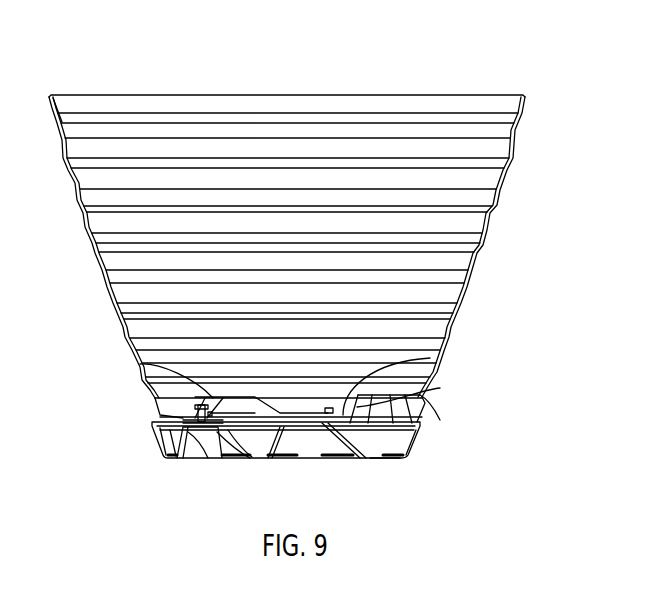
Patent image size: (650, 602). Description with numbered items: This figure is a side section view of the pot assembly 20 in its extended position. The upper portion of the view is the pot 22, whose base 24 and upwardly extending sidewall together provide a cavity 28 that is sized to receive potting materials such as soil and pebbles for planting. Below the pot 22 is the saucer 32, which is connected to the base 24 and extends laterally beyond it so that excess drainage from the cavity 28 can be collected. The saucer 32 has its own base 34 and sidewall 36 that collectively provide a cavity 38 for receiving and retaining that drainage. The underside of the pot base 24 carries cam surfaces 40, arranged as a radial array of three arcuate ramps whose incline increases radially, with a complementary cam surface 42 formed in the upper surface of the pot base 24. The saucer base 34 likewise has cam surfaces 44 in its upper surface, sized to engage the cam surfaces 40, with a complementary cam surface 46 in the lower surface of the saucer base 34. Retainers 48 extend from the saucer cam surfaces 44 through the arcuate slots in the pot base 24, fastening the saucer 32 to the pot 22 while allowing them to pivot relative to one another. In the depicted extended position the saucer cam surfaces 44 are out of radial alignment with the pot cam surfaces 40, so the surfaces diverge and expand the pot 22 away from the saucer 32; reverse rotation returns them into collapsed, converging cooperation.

The pot assembly 20 is at (333, 70).
The pot 22 is at (398, 91).
The base 24 is at (430, 358).
The cavity 28 is at (62, 122).
The saucer 32 is at (426, 428).
The base 34 is at (383, 458).
The sidewall 36 is at (410, 447).
The cavity 38 is at (172, 433).
The cam surfaces 40 is at (440, 388).
The complementary cam surface 42 is at (140, 364).
The cam surfaces 44 is at (220, 435).
The complementary cam surface 46 is at (203, 440).
The retainers 48 is at (198, 410).